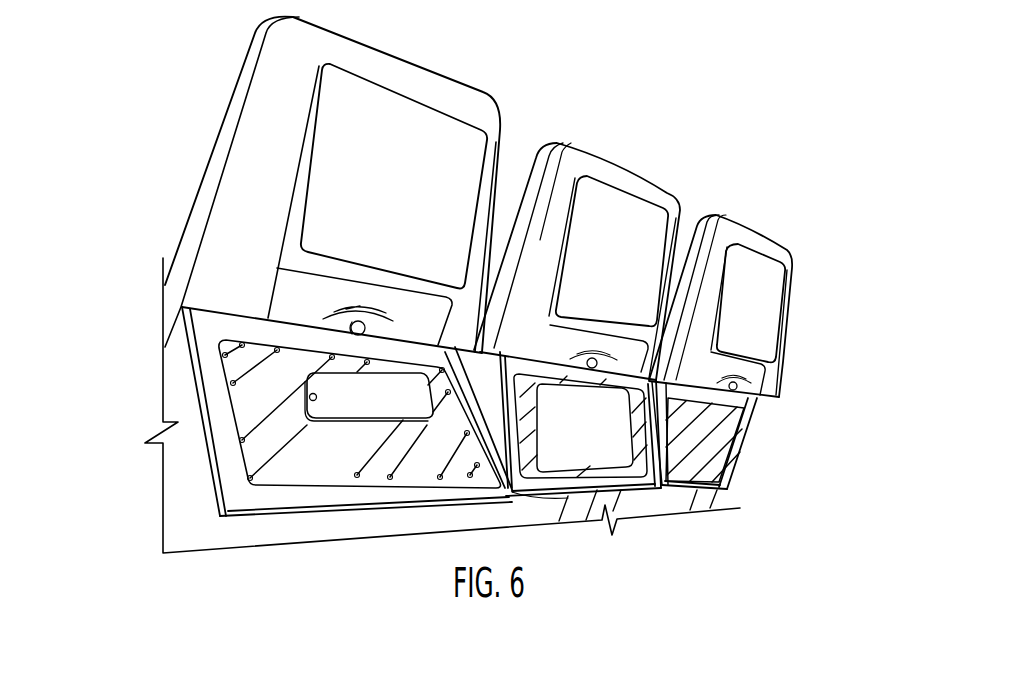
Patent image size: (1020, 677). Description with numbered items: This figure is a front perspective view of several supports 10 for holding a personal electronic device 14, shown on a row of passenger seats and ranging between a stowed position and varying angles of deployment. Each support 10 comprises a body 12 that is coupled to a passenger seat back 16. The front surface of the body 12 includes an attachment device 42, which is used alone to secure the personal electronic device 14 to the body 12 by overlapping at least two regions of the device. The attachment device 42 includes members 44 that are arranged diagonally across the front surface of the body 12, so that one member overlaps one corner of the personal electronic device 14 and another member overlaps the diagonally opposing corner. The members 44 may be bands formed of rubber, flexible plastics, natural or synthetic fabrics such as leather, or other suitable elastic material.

The support 10 is at (125, 342).
The body 12 is at (228, 427).
The personal electronic device 14 is at (332, 392).
The passenger seat back 16 is at (245, 193).
The attachment device 42 is at (293, 465).
The members 44 is at (272, 439).